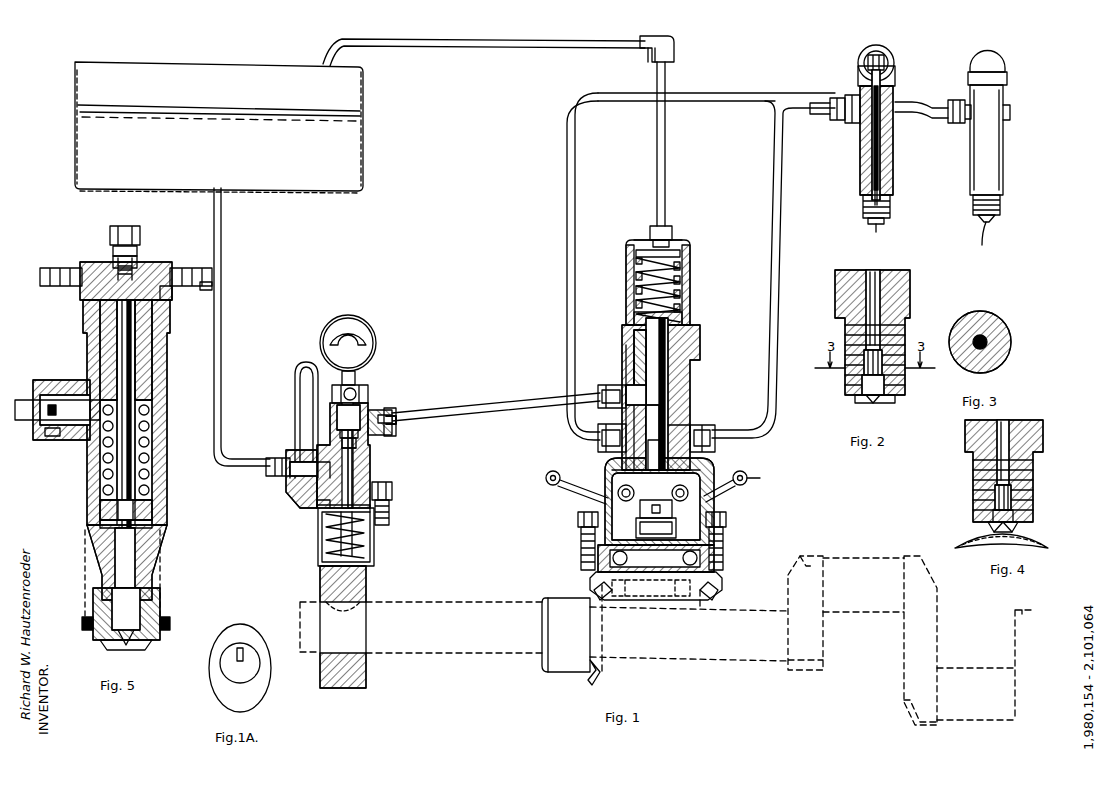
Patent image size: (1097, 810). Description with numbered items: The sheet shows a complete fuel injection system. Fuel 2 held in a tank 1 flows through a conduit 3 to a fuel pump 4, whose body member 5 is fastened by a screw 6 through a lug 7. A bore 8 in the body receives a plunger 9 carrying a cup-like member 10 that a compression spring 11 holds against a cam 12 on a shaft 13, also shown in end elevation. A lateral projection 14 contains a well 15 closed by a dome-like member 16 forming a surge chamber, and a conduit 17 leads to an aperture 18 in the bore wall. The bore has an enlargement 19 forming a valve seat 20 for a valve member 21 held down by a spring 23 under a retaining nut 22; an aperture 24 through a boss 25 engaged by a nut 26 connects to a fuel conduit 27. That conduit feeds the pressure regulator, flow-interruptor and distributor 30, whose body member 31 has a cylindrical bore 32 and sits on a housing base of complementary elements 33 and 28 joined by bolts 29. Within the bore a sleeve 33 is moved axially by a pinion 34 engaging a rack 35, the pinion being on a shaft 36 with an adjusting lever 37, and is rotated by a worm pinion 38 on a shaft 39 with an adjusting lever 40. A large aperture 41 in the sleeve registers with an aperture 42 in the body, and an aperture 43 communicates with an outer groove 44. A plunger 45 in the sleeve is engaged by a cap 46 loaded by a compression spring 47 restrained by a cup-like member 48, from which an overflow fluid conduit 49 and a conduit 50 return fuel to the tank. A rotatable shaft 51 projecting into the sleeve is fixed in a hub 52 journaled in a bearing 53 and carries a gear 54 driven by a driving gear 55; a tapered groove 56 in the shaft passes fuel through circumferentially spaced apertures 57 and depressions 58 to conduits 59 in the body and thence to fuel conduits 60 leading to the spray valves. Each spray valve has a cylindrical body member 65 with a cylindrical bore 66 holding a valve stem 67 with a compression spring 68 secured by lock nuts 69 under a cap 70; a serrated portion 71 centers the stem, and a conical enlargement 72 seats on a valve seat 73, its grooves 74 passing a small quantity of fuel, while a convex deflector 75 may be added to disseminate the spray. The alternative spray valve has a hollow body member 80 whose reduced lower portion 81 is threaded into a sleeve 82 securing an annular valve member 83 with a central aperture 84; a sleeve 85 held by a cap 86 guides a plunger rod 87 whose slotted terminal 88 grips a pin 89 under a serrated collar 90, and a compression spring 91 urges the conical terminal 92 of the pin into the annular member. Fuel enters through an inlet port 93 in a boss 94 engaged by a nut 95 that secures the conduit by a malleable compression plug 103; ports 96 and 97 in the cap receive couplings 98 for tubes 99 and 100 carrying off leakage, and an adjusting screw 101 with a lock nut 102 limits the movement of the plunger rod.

In FIG. 1, the tank 1 is at (75, 122).
In FIG. 1, the fuel 2 is at (320, 112).
In FIG. 1, the conduit 3 is at (222, 258).
In FIG. 1, the fuel pump 4 is at (279, 521).
In FIG. 1, the body member 5 is at (371, 470).
In FIG. 1, the screw 6 is at (388, 512).
In FIG. 4, the screw 6 is at (1006, 436).
In FIG. 1, the lug 7 is at (393, 492).
In FIG. 1, the bore 8 is at (370, 478).
In FIG. 1, the plunger 9 is at (330, 510).
In FIG. 1, the cup-like member 10 is at (374, 550).
In FIG. 1, the compression spring 11 is at (372, 532).
In FIG. 1, the cam 12 is at (367, 580).
In FIG. 1, the shaft 13 is at (425, 600).
In FIG. 1, the projection 14 is at (290, 492).
In FIG. 1, the well 15 is at (284, 462).
In FIG. 1, the dome-like member 16 is at (298, 395).
In FIG. 1, the conduit 17 is at (320, 458).
In FIG. 1, the aperture 18 is at (320, 500).
In FIG. 1, the enlarged bore 19 is at (368, 392).
In FIG. 1, the valve seat 20 is at (362, 440).
In FIG. 1, the valve member 21 is at (366, 455).
In FIG. 1, the retaining nut 22 is at (372, 365).
In FIG. 1, the spring 23 is at (350, 375).
In FIG. 1, the aperture 24 is at (380, 410).
In FIG. 1, the boss 25 is at (394, 414).
In FIG. 1, the nut 26 is at (398, 418).
In FIG. 1, the fuel conduit 27 is at (480, 408).
In FIG. 1, the complementary element 28 is at (724, 548).
In FIG. 1, the bolts 29 is at (727, 518).
In FIG. 1, the fuel pressure regulator flow-interruptor and fuel distributor 30 is at (781, 459).
In FIG. 1, the body member 31 is at (626, 375).
In FIG. 1, the cylindrical bore 32 is at (634, 350).
In FIG. 1, the sleeve 33 is at (634, 338).
In FIG. 1, the pinion 34 is at (672, 514).
In FIG. 1, the rack 35 is at (678, 502).
In FIG. 1, the shaft 36 is at (700, 484).
In FIG. 1, the adjusting lever 37 is at (749, 479).
In FIG. 1, the worm pinion 38 is at (626, 502).
In FIG. 1, the shaft 39 is at (612, 497).
In FIG. 1, the adjusting lever 40 is at (566, 485).
In FIG. 1, the aperture 41 is at (630, 392).
In FIG. 1, the aperture 42 is at (616, 392).
In FIG. 1, the aperture 43 is at (668, 380).
In FIG. 1, the groove 44 is at (700, 348).
In FIG. 1, the plunger 45 is at (670, 332).
In FIG. 1, the cap 46 is at (683, 315).
In FIG. 1, the compression spring 47 is at (690, 257).
In FIG. 1, the cup-like member 48 is at (690, 276).
In FIG. 1, the overflow fluid conduit 49 is at (666, 172).
In FIG. 1, the conduit 50 is at (528, 46).
In FIG. 1, the rotatable shaft 51 is at (628, 462).
In FIG. 1, the hub 52 is at (640, 528).
In FIG. 1, the bearing 53 is at (700, 560).
In FIG. 1, the gear 54 is at (714, 592).
In FIG. 1, the driving gear 55 is at (600, 680).
In FIG. 1, the groove 56 is at (684, 432).
In FIG. 1, the apertures 57 is at (654, 420).
In FIG. 1, the depressions 58 is at (702, 430).
In FIG. 1, the conduits 59 is at (604, 432).
In FIG. 1, the fuel conduits 60 is at (575, 245).
In FIG. 5, the fuel conduits 60 is at (25, 412).
In FIG. 1, the cylindrical body member 65 is at (893, 150).
In FIG. 2, the cylindrical body member 65 is at (905, 277).
In FIG. 4, the cylindrical body member 65 is at (1040, 426).
In FIG. 1, the cylindrical bore 66 is at (888, 182).
In FIG. 1, the valve stem 67 is at (884, 165).
In FIG. 2, the valve stem 67 is at (866, 280).
In FIG. 3, the valve stem 67 is at (1012, 341).
In FIG. 1, the compression spring 68 is at (895, 92).
In FIG. 1, the lock nuts 69 is at (885, 62).
In FIG. 1, the cap 70 is at (866, 58).
In FIG. 1, the enlarged longitudinally serrated portion 71 is at (866, 210).
In FIG. 2, the enlarged longitudinally serrated portion 71 is at (884, 362).
In FIG. 3, the enlarged longitudinally serrated portion 71 is at (987, 338).
In FIG. 4, the enlarged longitudinally serrated portion 71 is at (997, 495).
In FIG. 1, the conical enlargement 72 is at (876, 226).
In FIG. 2, the conical enlargement 72 is at (884, 404).
In FIG. 4, the conical enlargement 72 is at (1018, 524).
In FIG. 2, the valve seat 73 is at (896, 390).
In FIG. 2, the grooves 74 is at (872, 404).
In FIG. 4, the convex deflector 75 is at (1040, 548).
In FIG. 5, the hollow body member 80 is at (157, 432).
In FIG. 5, the reduced lower portion 81 is at (150, 565).
In FIG. 5, the sleeve 82 is at (160, 622).
In FIG. 5, the annular valve member 83 is at (116, 640).
In FIG. 5, the aperture 84 is at (132, 640).
In FIG. 5, the sleeve 85 is at (160, 352).
In FIG. 5, the cap 86 is at (160, 265).
In FIG. 5, the plunger rod 87 is at (117, 352).
In FIG. 5, the slotted terminal 88 is at (100, 525).
In FIG. 5, the pin 89 is at (120, 578).
In FIG. 5, the collar 90 is at (100, 512).
In FIG. 5, the compression spring 91 is at (152, 468).
In FIG. 5, the conical terminal 92 is at (82, 624).
In FIG. 5, the inlet port 93 is at (80, 388).
In FIG. 5, the boss 94 is at (90, 438).
In FIG. 5, the nut 95 is at (42, 435).
In FIG. 5, the port 96 is at (105, 264).
In FIG. 5, the port 97 is at (170, 300).
In FIG. 5, the couplings 98 is at (64, 266).
In FIG. 5, the tube 99 is at (204, 290).
In FIG. 5, the tube 100 is at (40, 278).
In FIG. 5, the adjusting screw 101 is at (125, 226).
In FIG. 5, the lock nut 102 is at (138, 250).
In FIG. 5, the compression plug 103 is at (62, 440).